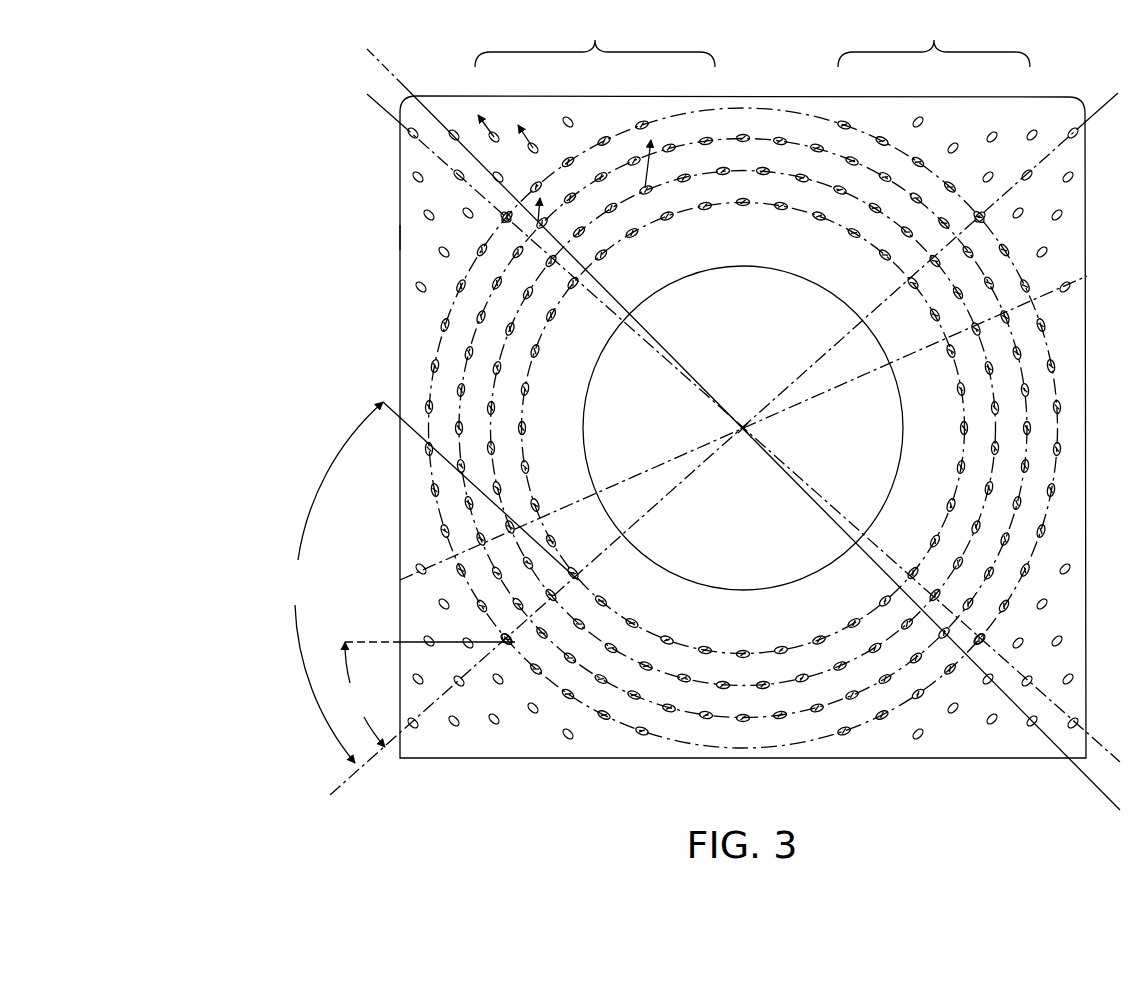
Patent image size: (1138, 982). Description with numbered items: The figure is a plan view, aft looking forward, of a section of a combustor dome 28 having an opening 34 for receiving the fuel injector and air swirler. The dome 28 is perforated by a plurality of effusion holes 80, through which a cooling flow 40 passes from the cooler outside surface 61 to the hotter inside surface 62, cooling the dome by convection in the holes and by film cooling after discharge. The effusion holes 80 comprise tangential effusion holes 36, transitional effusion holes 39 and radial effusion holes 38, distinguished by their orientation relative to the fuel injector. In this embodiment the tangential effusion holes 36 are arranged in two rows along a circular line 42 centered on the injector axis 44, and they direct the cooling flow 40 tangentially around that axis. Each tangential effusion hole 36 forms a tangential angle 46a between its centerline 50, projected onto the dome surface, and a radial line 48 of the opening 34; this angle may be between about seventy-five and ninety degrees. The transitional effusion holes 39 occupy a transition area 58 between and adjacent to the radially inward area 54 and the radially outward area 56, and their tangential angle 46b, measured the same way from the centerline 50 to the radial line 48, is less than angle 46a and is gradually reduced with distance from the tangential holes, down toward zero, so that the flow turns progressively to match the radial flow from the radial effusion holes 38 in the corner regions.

The dome 28 is at (310, 145).
The opening 34 is at (624, 422).
The tangential effusion hole 36 is at (649, 187).
The radial effusion hole 38 is at (497, 136).
The transitional effusion hole 39 is at (567, 162).
The cooling flow 40 is at (462, 150).
The circular line 42 is at (490, 430).
The injector axis 44 is at (744, 424).
The tangential angle 46a is at (327, 582).
The tangential angle 46b is at (357, 694).
The radial line 48 is at (398, 578).
The centerline 50 is at (511, 526).
The radially inward area 54 is at (504, 334).
The radially outward area 56 is at (434, 239).
The transition area 58 is at (469, 292).
The outside surface 61 is at (400, 235).
The inside surface 62 is at (412, 288).
The effusion holes 80 is at (752, 37).